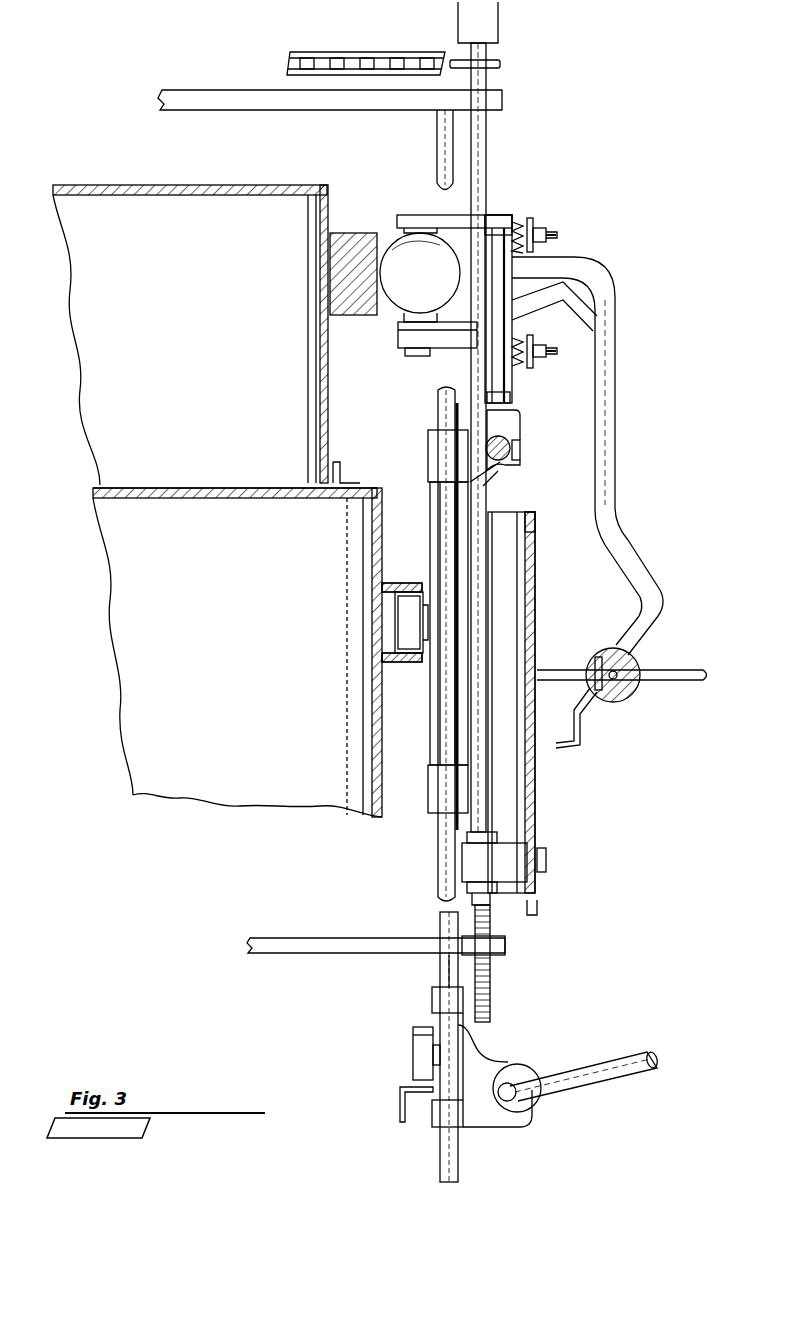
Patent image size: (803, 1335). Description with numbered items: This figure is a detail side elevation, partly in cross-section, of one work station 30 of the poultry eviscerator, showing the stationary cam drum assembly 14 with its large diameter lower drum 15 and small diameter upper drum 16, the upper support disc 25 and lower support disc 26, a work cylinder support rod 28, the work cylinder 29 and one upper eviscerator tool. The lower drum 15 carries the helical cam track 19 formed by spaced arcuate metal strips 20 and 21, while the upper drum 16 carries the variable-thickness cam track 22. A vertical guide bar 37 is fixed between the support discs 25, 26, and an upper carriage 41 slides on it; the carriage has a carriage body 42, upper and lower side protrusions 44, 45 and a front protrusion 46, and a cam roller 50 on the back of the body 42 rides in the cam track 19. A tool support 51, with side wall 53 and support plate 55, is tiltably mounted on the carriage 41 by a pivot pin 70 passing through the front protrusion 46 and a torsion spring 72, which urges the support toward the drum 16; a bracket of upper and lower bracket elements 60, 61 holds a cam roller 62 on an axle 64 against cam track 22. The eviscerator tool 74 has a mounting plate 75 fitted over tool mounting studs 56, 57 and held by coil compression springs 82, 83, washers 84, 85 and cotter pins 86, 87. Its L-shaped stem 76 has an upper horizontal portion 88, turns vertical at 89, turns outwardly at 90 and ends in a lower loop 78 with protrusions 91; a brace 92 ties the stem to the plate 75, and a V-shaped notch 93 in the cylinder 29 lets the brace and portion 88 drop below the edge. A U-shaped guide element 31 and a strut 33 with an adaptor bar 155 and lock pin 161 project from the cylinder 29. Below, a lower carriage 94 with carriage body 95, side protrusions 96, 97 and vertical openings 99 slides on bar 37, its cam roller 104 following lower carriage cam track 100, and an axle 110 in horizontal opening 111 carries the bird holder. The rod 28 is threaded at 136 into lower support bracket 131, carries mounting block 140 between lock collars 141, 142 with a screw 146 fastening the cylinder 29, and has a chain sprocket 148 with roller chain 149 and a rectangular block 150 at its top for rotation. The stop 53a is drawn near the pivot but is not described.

The cam drum assembly 14 is at (369, 486).
The lower drum 15 is at (398, 775).
The upper drum 16 is at (330, 391).
The cam track 19 is at (383, 584).
The arcuate metal strip 20 is at (398, 663).
The arcuate metal strip 21 is at (410, 583).
The cam track 22 is at (350, 236).
The upper support disc 25 is at (227, 90).
The lower support disc 26 is at (298, 938).
The work cylinder support rod 28 is at (487, 81).
The work cylinder 29 is at (535, 632).
The work station 30 is at (662, 863).
The upper U-shaped guide element 31 is at (686, 681).
The strut 33 is at (632, 660).
The vertical guide bar 37 is at (437, 145).
The upper carriage 41 is at (462, 597).
The carriage body 42 is at (440, 712).
The upper side protrusion 44 is at (440, 456).
The lower side protrusion 45 is at (441, 792).
The front protrusion 46 is at (493, 473).
The cam roller 50 is at (403, 622).
The tool support 51 is at (495, 212).
The side wall 53 is at (481, 411).
The stop 53a is at (516, 463).
The support plate 55 is at (498, 227).
The tool mounting stud 56 is at (540, 351).
The tool mounting stud 57 is at (546, 231).
The upper bracket element 60 is at (440, 217).
The lower bracket element 61 is at (445, 336).
The cam roller 62 is at (400, 297).
The axle 64 is at (406, 354).
The pivot pin 70 is at (511, 441).
The torsion spring 72 is at (500, 421).
The eviscerator tool 74 is at (612, 444).
The mounting plate 75 is at (488, 278).
The L-shaped stem 76 is at (616, 397).
The lower loop 78 is at (653, 631).
The coil compression spring 82 is at (517, 220).
The coil compression spring 83 is at (520, 345).
The washer 84 is at (531, 222).
The washer 85 is at (536, 374).
The cotter pin 86 is at (560, 240).
The cotter pin 87 is at (556, 351).
The upper horizontal portion 88 is at (580, 272).
The vertical portion 89 is at (606, 465).
The outward turn 90 is at (627, 546).
The protrusion 91 is at (560, 752).
The brace 92 is at (577, 307).
The V-shaped notch 93 is at (531, 524).
The lower carriage 94 is at (558, 1075).
The carriage body 95 is at (479, 1043).
The upper side protrusion 96 is at (434, 1000).
The lower side protrusion 97 is at (441, 1115).
The vertical opening 99 is at (440, 975).
The lower carriage cam track 100 is at (405, 1095).
The cam roller 104 is at (414, 1055).
The axle 110 is at (520, 1110).
The horizontal opening 111 is at (512, 1062).
The lower support bracket 131 is at (499, 946).
The threads 136 is at (491, 976).
The mounting block 140 is at (505, 858).
The lock collar 141 is at (468, 888).
The lock collar 142 is at (468, 837).
The screw 146 is at (548, 862).
The chain sprocket 148 is at (501, 63).
The roller chain 149 is at (333, 54).
The rectangular block 150 is at (498, 22).
The adaptor bar 155 is at (617, 703).
The lock pin 161 is at (597, 658).